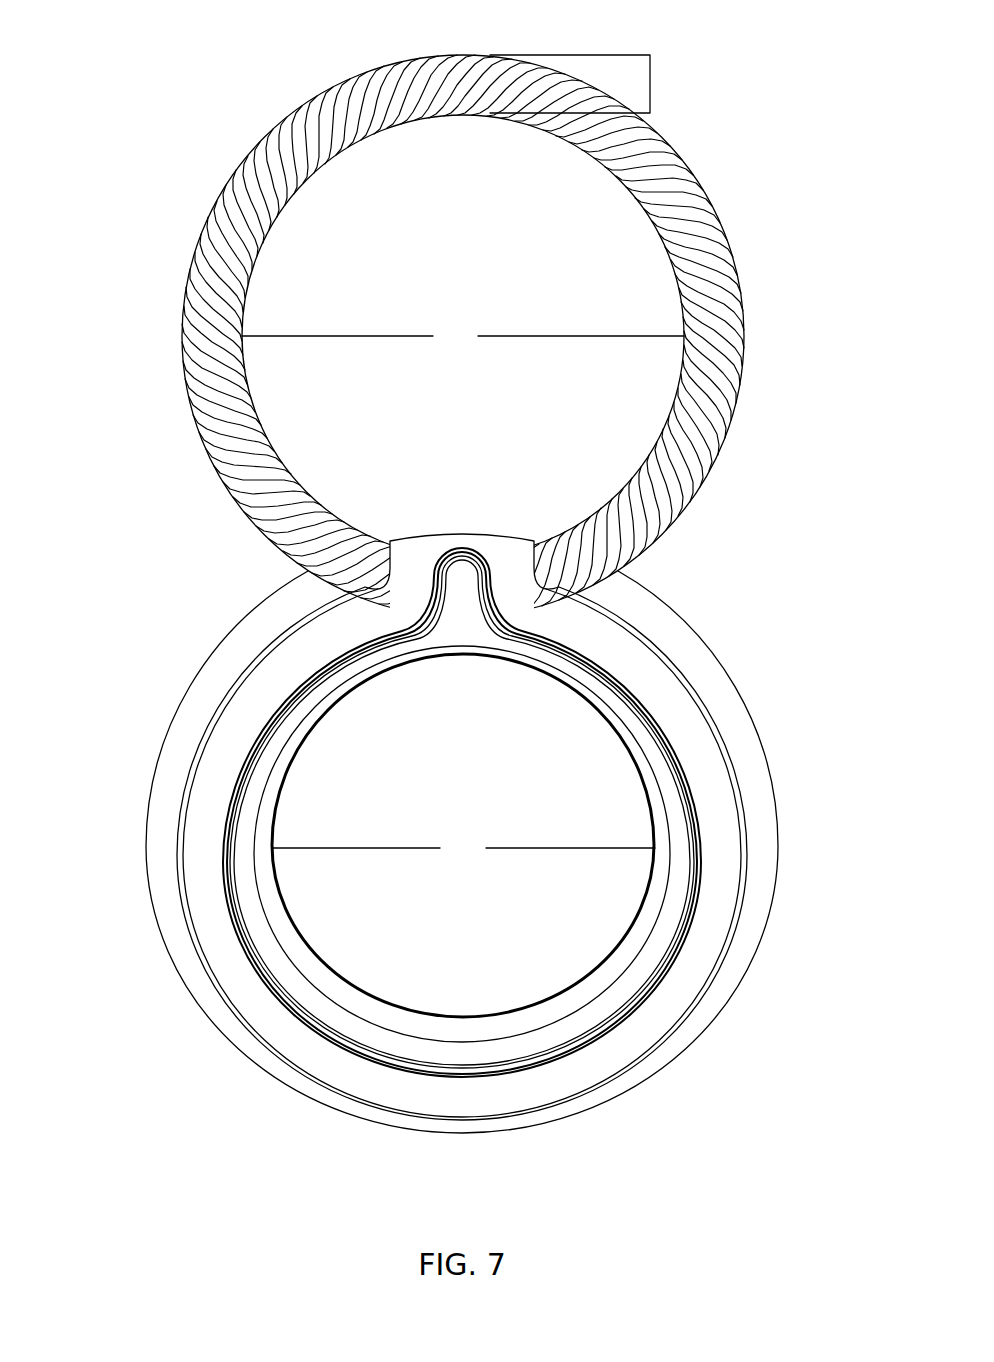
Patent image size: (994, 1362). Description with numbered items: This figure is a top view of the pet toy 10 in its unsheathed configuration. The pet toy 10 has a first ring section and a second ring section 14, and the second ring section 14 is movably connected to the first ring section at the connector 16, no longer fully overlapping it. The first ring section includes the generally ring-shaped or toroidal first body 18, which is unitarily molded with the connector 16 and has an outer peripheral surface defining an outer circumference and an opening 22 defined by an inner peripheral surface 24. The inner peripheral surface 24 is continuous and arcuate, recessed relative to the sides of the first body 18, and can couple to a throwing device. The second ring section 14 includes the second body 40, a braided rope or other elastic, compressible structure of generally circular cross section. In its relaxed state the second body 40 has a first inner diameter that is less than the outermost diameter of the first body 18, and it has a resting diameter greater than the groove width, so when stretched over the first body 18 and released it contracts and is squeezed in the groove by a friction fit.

The pet toy 10 is at (104, 81).
The second ring section 14 is at (718, 218).
The connector 16 is at (737, 682).
The first body 18 is at (683, 985).
The opening 22 is at (396, 1004).
The inner peripheral surface 24 is at (513, 1006).
The second body 40 is at (722, 450).